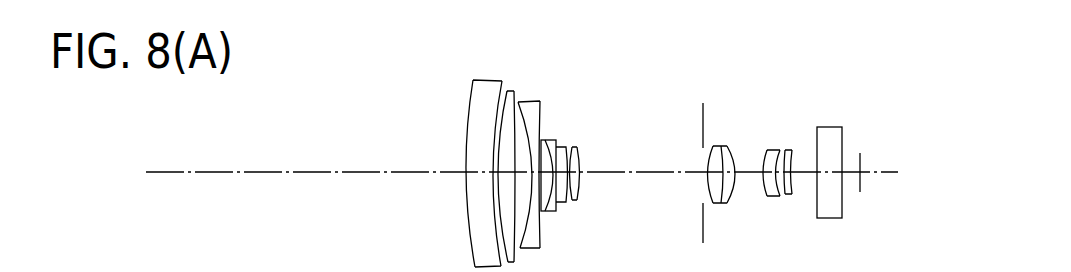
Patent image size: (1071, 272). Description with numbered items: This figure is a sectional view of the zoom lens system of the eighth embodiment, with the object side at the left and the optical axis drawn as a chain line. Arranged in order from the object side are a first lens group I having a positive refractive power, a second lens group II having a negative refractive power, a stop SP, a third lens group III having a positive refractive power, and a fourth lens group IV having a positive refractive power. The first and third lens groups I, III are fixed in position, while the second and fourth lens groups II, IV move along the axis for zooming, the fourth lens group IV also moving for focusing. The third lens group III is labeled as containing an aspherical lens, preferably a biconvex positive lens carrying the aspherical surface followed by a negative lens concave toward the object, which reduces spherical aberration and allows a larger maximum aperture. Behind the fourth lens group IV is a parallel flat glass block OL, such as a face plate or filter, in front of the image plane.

The first lens group I is at (540, 37).
The second lens group II is at (582, 37).
The third lens group III is at (738, 37).
The fourth lens group IV is at (798, 37).
The stop SP is at (703, 228).
The optical low-pass filter / glass block OL is at (842, 127).